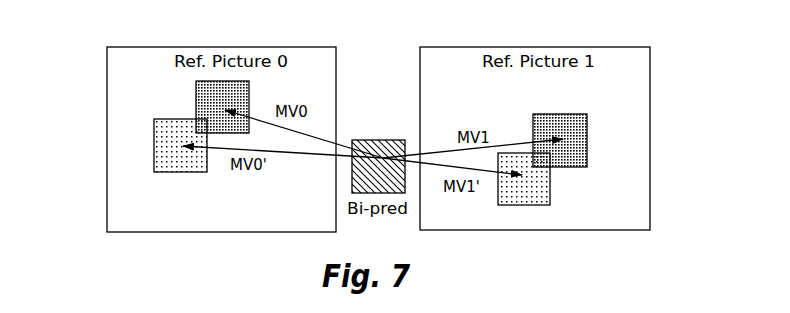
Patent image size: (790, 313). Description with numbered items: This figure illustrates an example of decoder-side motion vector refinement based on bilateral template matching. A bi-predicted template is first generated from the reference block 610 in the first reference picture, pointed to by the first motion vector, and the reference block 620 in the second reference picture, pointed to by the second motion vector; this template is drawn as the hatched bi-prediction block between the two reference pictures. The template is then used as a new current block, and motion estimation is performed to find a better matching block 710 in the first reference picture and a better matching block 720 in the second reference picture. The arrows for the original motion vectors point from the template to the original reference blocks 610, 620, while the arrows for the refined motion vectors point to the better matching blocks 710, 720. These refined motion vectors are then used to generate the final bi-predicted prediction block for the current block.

The reference block 610 is at (196, 100).
The better matching block 710 is at (154, 147).
The reference block 620 is at (587, 133).
The better matching block 720 is at (550, 191).